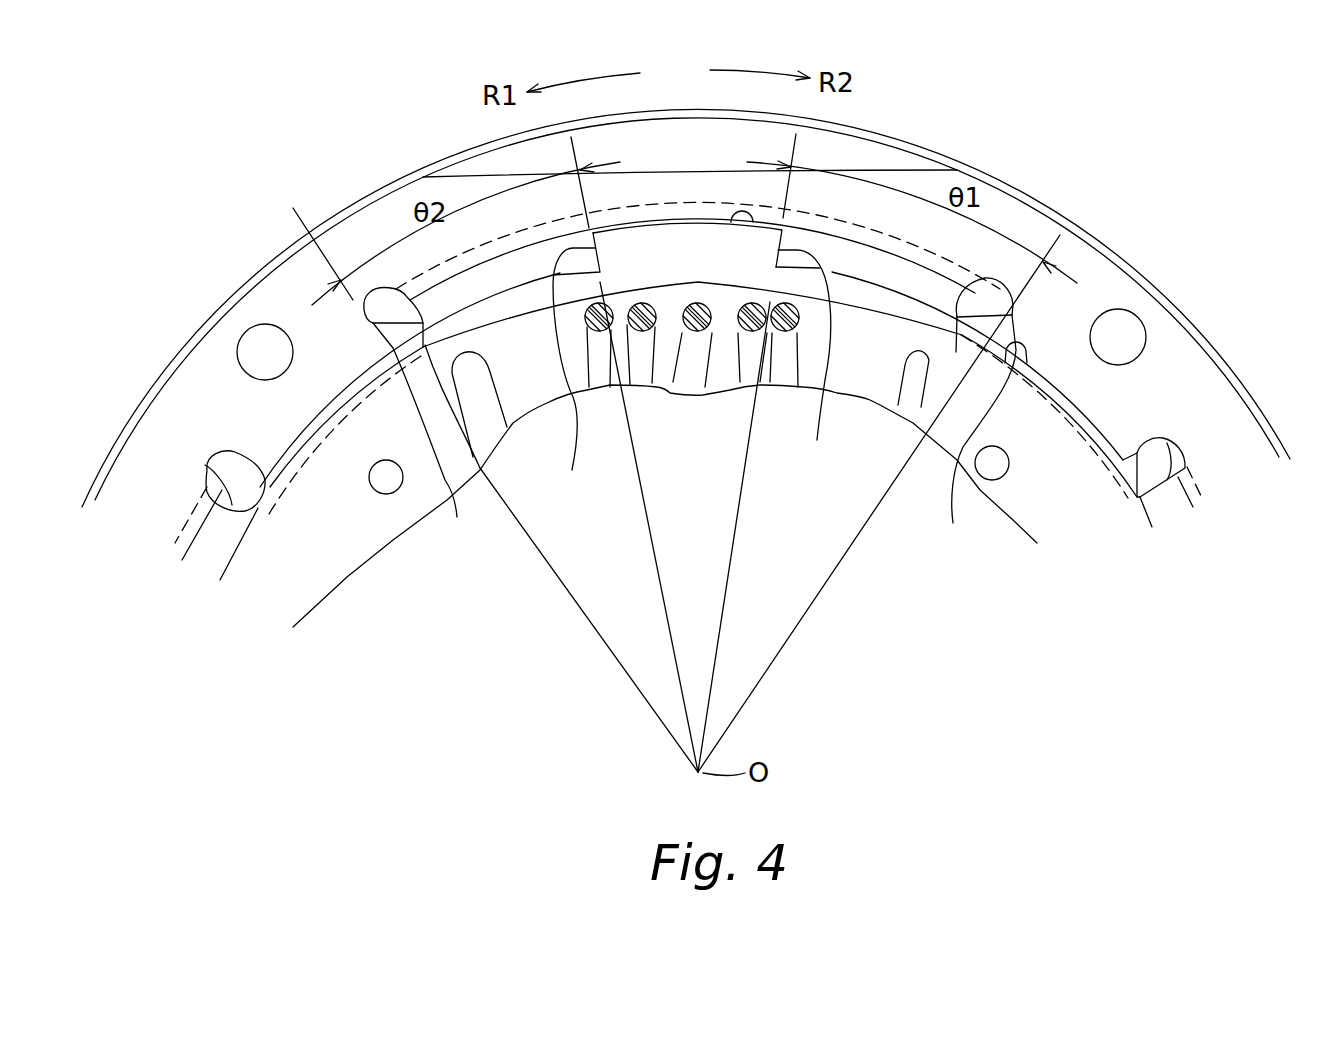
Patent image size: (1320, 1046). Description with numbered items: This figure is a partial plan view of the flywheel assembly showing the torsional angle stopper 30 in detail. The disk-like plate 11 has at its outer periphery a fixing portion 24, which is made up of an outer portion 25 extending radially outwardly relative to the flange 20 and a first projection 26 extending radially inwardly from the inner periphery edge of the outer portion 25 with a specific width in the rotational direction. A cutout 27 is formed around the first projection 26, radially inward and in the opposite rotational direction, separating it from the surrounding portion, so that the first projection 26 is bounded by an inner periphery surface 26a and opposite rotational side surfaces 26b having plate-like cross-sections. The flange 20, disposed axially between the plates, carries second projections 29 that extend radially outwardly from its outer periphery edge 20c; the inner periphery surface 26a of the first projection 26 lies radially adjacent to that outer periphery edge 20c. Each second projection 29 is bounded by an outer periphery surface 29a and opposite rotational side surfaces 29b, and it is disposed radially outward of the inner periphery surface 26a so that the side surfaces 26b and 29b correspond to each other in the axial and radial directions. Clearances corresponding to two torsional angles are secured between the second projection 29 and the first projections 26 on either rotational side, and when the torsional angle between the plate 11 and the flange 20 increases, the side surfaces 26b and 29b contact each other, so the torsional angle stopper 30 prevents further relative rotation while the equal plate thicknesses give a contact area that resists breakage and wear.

The disk-like plate 11 is at (389, 221).
The flange 20 is at (353, 480).
The outer periphery edge 20c is at (973, 440).
The fixing portion 24 is at (203, 222).
The outer portion 25 is at (207, 350).
The first projection 26 is at (330, 378).
The inner periphery surface 26a is at (1113, 397).
The opposite rotational side surface 26b is at (1140, 497).
The cutout 27 is at (207, 463).
The second projection 29 is at (672, 240).
The outer periphery surface 29a is at (743, 224).
The opposite rotational side surface 29b is at (692, 415).
The torsional angle stopper 30 is at (632, 214).